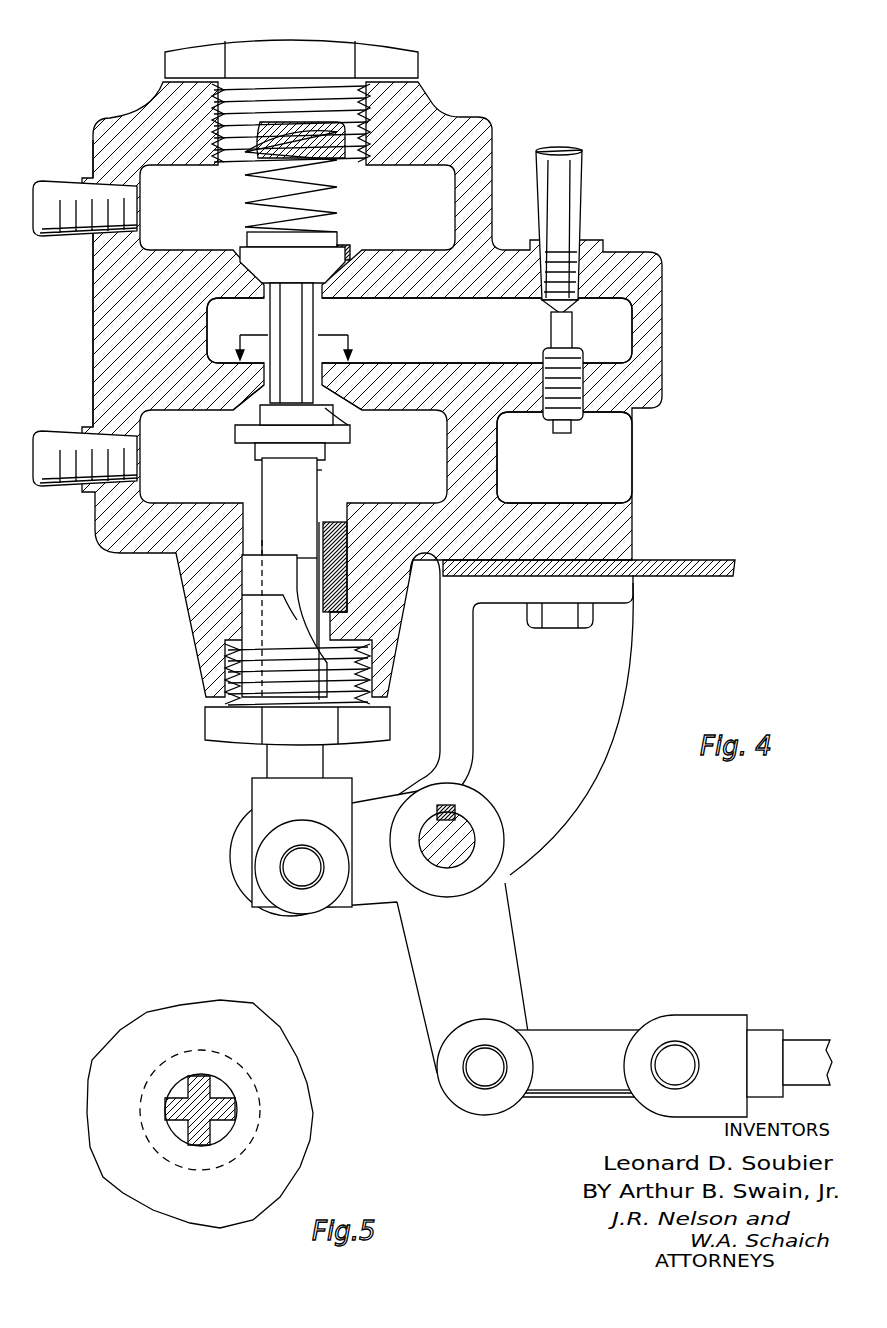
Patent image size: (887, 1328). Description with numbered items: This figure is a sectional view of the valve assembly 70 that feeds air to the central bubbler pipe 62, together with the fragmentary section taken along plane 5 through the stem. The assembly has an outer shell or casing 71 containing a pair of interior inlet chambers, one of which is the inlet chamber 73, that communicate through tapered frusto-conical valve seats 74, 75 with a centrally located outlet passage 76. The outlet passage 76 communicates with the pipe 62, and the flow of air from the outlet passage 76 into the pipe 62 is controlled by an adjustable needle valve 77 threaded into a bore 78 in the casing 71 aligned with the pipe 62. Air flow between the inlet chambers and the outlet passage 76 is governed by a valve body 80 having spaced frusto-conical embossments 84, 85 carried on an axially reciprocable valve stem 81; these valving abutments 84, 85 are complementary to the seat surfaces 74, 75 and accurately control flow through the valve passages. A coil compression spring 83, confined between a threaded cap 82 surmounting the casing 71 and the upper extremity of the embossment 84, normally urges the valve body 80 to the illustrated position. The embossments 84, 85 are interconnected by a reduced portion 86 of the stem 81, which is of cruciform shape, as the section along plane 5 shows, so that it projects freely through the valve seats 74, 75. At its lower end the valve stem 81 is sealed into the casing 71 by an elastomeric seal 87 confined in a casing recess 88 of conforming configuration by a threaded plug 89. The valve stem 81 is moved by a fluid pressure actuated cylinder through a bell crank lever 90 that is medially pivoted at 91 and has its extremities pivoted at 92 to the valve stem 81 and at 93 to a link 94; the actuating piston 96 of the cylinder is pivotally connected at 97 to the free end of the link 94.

In FIG. 4, the section plane 5— 5 is at (290, 334).
In FIG. 4, the central pipe 62 is at (570, 192).
In FIG. 4, the valve assembly 70 is at (492, 120).
In FIG. 5, the valve assembly 70 is at (178, 1192).
In FIG. 4, the outer shell or casing 71 is at (100, 292).
In FIG. 4, the interior inlet chamber 73 is at (450, 458).
In FIG. 4, the frusto-conical valve seat 74 is at (240, 262).
In FIG. 4, the frusto-conical valve seat 75 is at (245, 415).
In FIG. 5, the frusto-conical valve seat 75 is at (182, 1128).
In FIG. 4, the outlet passage 76 is at (455, 348).
In FIG. 4, the adjustable needle valve 77 is at (565, 330).
In FIG. 4, the bore 78 is at (550, 378).
In FIG. 4, the valve body 80 is at (333, 470).
In FIG. 4, the valve stem 81 is at (268, 478).
In FIG. 4, the threaded cap 82 is at (262, 96).
In FIG. 4, the coil compression spring 83 is at (352, 190).
In FIG. 4, the frusto-conical valve embossment 84 is at (346, 258).
In FIG. 4, the frusto-conical valve embossment 85 is at (350, 435).
In FIG. 4, the reduced portion of the valve stem 86 is at (300, 308).
In FIG. 5, the reduced portion of the valve stem 86 is at (218, 1100).
In FIG. 4, the elastomeric seal 87 is at (340, 540).
In FIG. 4, the casing recess 88 is at (345, 576).
In FIG. 4, the threaded plug 89 is at (238, 722).
In FIG. 4, the bell crank lever 90 is at (505, 935).
In FIG. 4, the medial pivot 91 is at (455, 840).
In FIG. 4, the pivot 92 is at (300, 868).
In FIG. 4, the pivot 93 is at (480, 1072).
In FIG. 4, the link 94 is at (585, 1035).
In FIG. 4, the actuating piston 96 is at (793, 1045).
In FIG. 4, the pivot 97 is at (677, 1060).